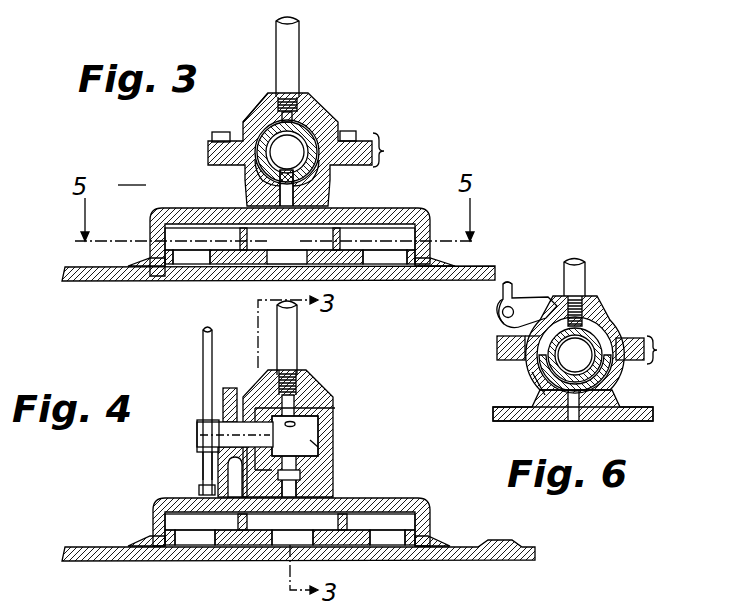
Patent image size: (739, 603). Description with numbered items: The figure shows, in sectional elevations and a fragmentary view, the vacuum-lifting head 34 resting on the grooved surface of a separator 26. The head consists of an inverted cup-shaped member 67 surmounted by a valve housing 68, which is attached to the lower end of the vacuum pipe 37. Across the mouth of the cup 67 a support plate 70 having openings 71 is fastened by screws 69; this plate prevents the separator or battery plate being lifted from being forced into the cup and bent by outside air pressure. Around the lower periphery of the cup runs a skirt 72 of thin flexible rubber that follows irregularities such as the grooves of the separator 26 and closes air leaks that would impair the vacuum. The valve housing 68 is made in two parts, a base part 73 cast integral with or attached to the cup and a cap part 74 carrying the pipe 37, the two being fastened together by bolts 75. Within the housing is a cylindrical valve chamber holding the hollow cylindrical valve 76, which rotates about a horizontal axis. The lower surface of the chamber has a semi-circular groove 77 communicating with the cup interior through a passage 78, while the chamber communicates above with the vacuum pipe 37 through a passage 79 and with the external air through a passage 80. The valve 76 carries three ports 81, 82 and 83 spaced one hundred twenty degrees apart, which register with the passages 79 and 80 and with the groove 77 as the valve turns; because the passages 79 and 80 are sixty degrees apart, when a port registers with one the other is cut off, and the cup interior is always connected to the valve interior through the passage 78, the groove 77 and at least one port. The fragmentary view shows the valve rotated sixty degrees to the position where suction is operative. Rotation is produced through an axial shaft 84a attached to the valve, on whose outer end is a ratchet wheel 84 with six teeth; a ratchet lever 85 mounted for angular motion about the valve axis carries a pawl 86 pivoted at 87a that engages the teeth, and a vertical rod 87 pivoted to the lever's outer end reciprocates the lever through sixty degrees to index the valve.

In FIG. 3, the separator 26 is at (376, 281).
In FIG. 4, the separator 26 is at (500, 561).
In FIG. 3, the vacuum-lifting head 34 is at (132, 177).
In FIG. 3, the vacuum pipe 37 is at (296, 62).
In FIG. 4, the vacuum pipe 37 is at (297, 356).
In FIG. 6, the vacuum pipe 37 is at (583, 268).
In FIG. 3, the inverted cup-shaped member 67 is at (172, 213).
In FIG. 4, the inverted cup-shaped member 67 is at (425, 500).
In FIG. 6, the inverted cup-shaped member 67 is at (495, 415).
In FIG. 3, the valve housing 68 is at (386, 152).
In FIG. 6, the valve housing 68 is at (648, 350).
In FIG. 3, the screws 69 is at (290, 239).
In FIG. 4, the screws 69 is at (238, 521).
In FIG. 3, the support plate 70 is at (230, 262).
In FIG. 4, the support plate 70 is at (235, 545).
In FIG. 3, the openings 71 is at (187, 260).
In FIG. 4, the openings 71 is at (190, 545).
In FIG. 3, the skirt 72 is at (150, 265).
In FIG. 4, the skirt 72 is at (150, 541).
In FIG. 3, the base part 73 is at (331, 171).
In FIG. 4, the base part 73 is at (334, 446).
In FIG. 3, the cap part 74 is at (324, 116).
In FIG. 4, the cap part 74 is at (331, 396).
In FIG. 6, the cap part 74 is at (575, 344).
In FIG. 3, the bolts 75 is at (216, 135).
In FIG. 3, the cylindrical valve 76 is at (244, 169).
In FIG. 4, the cylindrical valve 76 is at (333, 430).
In FIG. 6, the cylindrical valve 76 is at (606, 345).
In FIG. 3, the semi-circular groove 77 is at (262, 185).
In FIG. 4, the semi-circular groove 77 is at (334, 472).
In FIG. 3, the passage 78 is at (322, 210).
In FIG. 4, the passage 78 is at (334, 492).
In FIG. 6, the passage 78 is at (578, 420).
In FIG. 3, the passage 79 is at (302, 103).
In FIG. 4, the passage 79 is at (297, 398).
In FIG. 6, the passage 79 is at (584, 330).
In FIG. 3, the passage 80 is at (257, 122).
In FIG. 6, the passage 80 is at (512, 352).
In FIG. 3, the port 81 is at (287, 152).
In FIG. 6, the port 81 is at (584, 338).
In FIG. 3, the port 82 is at (318, 134).
In FIG. 6, the port 82 is at (601, 372).
In FIG. 3, the port 83 is at (300, 180).
In FIG. 6, the port 83 is at (540, 385).
In FIG. 4, the ratchet wheel 84 is at (230, 388).
In FIG. 6, the ratchet wheel 84 is at (553, 297).
In FIG. 4, the axial shaft 84a is at (197, 447).
In FIG. 6, the ratchet lever 85 is at (497, 340).
In FIG. 6, the pawl 86 is at (529, 293).
In FIG. 4, the vertical rod 87 is at (203, 350).
In FIG. 6, the vertical rod 87 is at (502, 292).
In FIG. 6, the pivot 87a is at (502, 314).